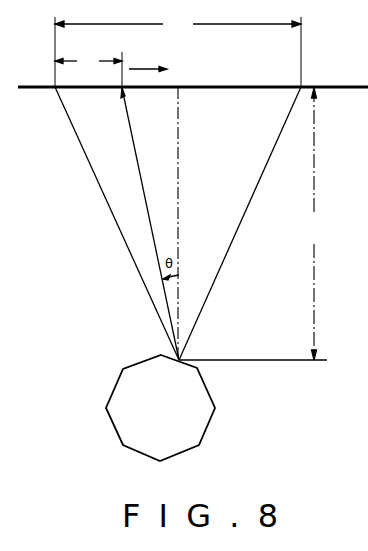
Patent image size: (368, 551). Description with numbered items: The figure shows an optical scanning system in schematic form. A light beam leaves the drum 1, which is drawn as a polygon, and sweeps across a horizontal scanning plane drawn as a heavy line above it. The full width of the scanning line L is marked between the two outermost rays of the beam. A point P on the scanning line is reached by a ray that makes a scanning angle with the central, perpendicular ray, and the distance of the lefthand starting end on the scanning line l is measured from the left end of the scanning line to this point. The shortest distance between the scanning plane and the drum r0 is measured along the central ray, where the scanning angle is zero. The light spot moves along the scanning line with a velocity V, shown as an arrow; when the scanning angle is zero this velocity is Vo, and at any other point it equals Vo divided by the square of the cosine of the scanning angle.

The rotating drum 1 is at (110, 426).
The full width of scanning line L is at (178, 26).
The distance of lefthand starting end on the scanning line l is at (88, 62).
The velocity of light spot V is at (156, 70).
The scanning point P is at (143, 224).
The shortest distance between the scanning plane and the drum r0 is at (253, 224).